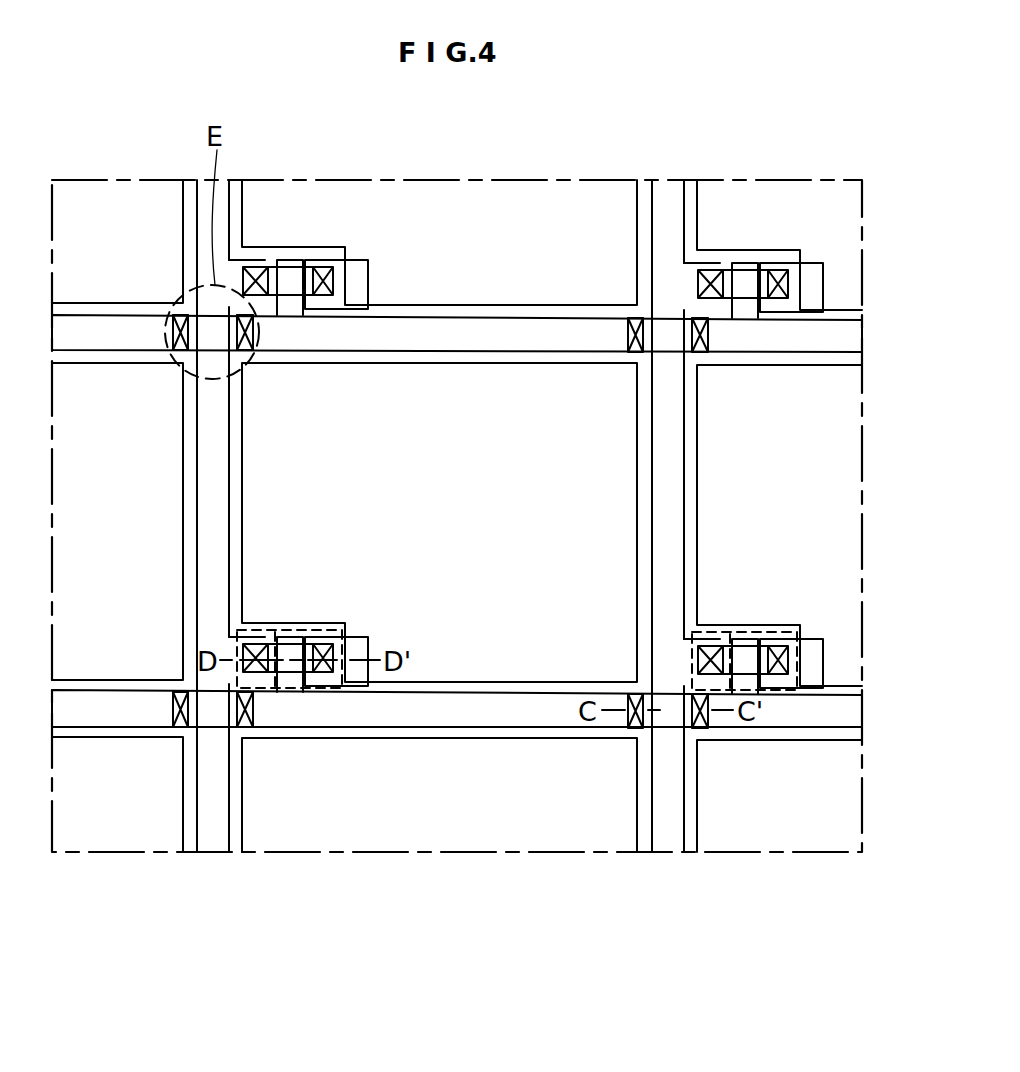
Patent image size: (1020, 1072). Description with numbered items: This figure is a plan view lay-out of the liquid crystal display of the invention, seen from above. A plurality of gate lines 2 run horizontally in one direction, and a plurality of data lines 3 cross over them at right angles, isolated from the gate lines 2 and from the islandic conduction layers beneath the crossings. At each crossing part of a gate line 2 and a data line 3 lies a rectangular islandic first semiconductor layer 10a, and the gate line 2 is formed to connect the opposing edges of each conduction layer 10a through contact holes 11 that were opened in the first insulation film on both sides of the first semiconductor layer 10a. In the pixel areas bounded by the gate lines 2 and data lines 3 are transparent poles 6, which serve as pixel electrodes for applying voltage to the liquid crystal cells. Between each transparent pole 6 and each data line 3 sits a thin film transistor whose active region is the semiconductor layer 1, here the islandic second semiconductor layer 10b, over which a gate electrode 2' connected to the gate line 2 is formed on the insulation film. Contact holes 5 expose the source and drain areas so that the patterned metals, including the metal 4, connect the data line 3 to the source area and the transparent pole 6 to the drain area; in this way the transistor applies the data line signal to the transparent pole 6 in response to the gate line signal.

The semiconductor layer 1 is at (747, 633).
The gate line 2 is at (483, 607).
The gate electrode 2' is at (501, 609).
The data line 3 is at (656, 832).
The metal 4 is at (815, 638).
The contact hole 5 is at (790, 660).
The transparent pole 6 is at (848, 410).
The first semiconductor layer 10a is at (215, 737).
The second semiconductor layer 10b is at (760, 640).
The contact hole 11 is at (176, 737).